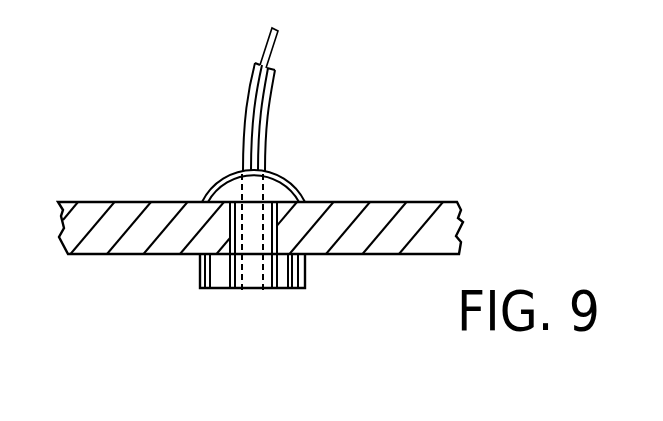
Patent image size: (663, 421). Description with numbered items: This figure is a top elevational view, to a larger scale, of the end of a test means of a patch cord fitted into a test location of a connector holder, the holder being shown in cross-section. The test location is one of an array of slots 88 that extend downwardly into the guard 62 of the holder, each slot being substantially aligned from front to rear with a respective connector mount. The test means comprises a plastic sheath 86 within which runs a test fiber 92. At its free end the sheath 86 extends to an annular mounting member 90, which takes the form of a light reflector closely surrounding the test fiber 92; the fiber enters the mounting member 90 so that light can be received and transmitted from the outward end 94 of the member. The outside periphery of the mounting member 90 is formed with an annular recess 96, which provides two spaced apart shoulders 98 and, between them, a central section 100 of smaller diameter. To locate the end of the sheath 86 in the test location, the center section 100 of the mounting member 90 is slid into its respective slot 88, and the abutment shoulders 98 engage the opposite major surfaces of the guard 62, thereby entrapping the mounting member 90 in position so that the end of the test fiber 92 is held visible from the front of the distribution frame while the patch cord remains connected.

The guard 62 is at (472, 231).
The sheath 86 is at (263, 135).
The slot 88 is at (218, 287).
The annular mounting member 90 is at (315, 285).
The test fiber 92 is at (276, 44).
The outward end 94 is at (247, 288).
The annular recess 96 is at (230, 233).
The shoulders 98 is at (222, 176).
The center section 100 is at (275, 232).